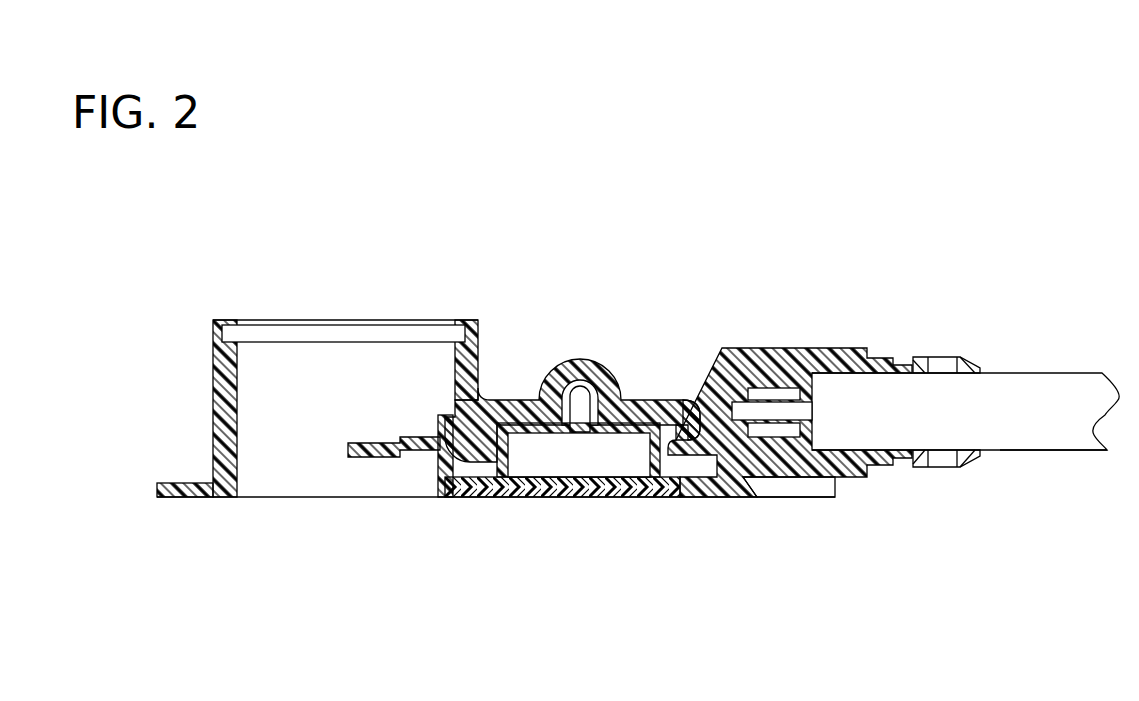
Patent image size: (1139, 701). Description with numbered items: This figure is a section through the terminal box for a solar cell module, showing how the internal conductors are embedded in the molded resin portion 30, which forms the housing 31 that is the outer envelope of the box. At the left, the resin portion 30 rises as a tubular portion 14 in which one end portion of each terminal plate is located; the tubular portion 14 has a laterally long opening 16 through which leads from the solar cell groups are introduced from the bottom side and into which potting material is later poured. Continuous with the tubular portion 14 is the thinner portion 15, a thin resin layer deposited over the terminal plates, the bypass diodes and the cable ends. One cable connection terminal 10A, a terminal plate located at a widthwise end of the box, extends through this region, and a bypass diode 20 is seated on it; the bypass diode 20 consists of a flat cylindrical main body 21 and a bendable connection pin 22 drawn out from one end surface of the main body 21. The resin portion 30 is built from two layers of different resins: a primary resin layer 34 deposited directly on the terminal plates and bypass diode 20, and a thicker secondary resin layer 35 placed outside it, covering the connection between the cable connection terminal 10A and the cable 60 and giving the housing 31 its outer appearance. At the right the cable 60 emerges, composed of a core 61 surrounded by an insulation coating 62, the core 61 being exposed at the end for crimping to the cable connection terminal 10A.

The tubular portion 14 is at (470, 320).
The opening 16 is at (237, 388).
The thinner portion 15 is at (505, 400).
The connection pin 22 is at (580, 390).
The main body 21 is at (622, 447).
The cable connection terminal 10A is at (372, 460).
The bypass diode 20 is at (543, 477).
The resin portion 30 is at (824, 423).
The housing 31 is at (946, 412).
The primary resin layer 34 is at (683, 438).
The secondary resin layer 35 is at (735, 352).
The core 61 is at (776, 415).
The cable 60 is at (1040, 373).
The insulation coating 62 is at (1060, 440).